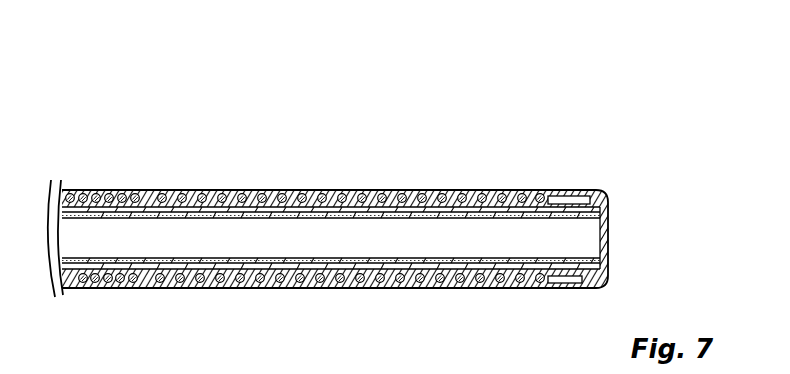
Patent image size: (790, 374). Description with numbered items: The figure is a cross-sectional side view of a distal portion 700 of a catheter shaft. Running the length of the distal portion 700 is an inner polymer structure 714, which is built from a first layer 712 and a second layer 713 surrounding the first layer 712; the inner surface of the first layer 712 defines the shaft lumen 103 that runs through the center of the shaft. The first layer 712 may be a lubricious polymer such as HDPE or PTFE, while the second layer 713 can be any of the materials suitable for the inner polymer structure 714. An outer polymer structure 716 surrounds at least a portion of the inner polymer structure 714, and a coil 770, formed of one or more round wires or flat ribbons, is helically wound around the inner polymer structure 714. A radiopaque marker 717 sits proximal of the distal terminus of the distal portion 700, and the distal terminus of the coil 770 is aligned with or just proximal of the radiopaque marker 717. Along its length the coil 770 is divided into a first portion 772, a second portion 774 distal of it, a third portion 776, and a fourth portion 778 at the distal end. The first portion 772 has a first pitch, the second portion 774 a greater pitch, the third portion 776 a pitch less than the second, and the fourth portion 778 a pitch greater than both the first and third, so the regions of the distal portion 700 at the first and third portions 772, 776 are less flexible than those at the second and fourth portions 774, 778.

The distal portion 700 is at (54, 103).
The first portion 772 is at (66, 183).
The second portion 774 is at (141, 183).
The third portion 776 is at (318, 183).
The fourth portion 778 is at (545, 183).
The radiopaque marker 717 is at (562, 199).
The inner polymer structure 714 is at (612, 205).
The first layer 712 is at (128, 212).
The second layer 713 is at (203, 213).
The lumen 103 is at (341, 248).
The outer polymer structure 716 is at (307, 290).
The coil 770 is at (448, 290).